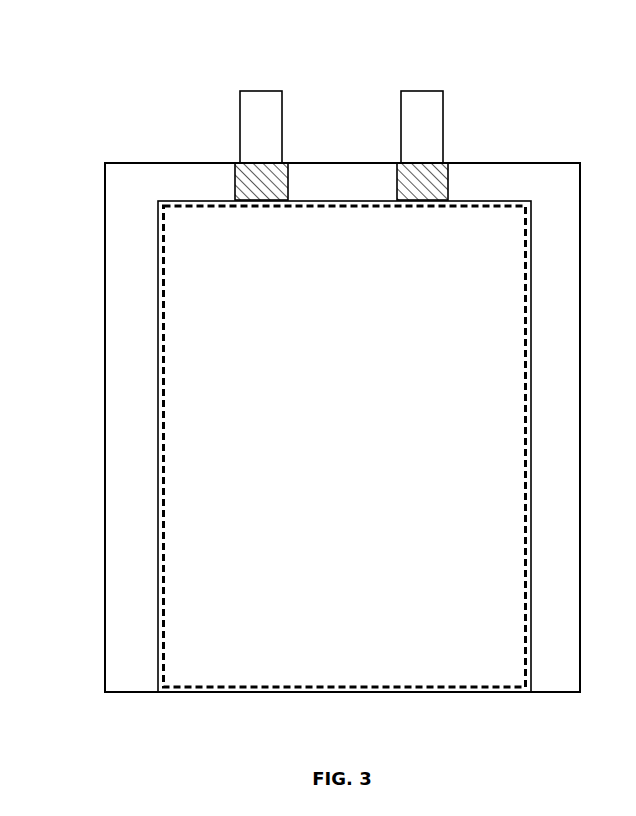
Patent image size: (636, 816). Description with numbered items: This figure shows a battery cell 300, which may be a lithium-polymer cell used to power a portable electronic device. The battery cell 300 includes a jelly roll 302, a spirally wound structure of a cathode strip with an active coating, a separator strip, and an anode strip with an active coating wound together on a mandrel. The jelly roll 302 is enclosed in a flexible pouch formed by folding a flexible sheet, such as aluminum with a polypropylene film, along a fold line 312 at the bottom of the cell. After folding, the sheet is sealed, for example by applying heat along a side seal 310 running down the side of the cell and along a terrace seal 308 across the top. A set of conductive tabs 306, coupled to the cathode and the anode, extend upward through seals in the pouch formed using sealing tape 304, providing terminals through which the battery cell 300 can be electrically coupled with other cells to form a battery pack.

The battery cell 300 is at (105, 163).
The jelly roll 302 is at (344, 446).
The sealing tape 304 is at (265, 200).
The conductive tabs 306 is at (408, 88).
The terrace seal 308 is at (477, 162).
The side seal 310 is at (105, 420).
The fold line 312 is at (410, 692).